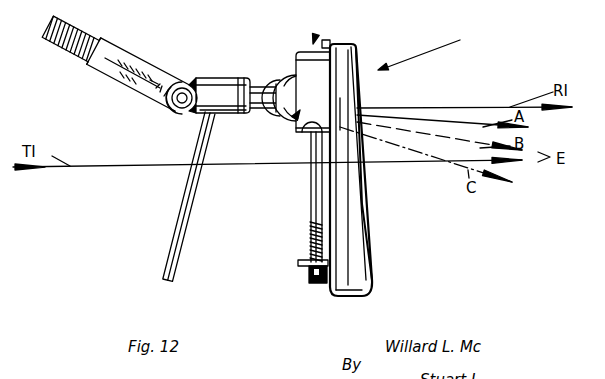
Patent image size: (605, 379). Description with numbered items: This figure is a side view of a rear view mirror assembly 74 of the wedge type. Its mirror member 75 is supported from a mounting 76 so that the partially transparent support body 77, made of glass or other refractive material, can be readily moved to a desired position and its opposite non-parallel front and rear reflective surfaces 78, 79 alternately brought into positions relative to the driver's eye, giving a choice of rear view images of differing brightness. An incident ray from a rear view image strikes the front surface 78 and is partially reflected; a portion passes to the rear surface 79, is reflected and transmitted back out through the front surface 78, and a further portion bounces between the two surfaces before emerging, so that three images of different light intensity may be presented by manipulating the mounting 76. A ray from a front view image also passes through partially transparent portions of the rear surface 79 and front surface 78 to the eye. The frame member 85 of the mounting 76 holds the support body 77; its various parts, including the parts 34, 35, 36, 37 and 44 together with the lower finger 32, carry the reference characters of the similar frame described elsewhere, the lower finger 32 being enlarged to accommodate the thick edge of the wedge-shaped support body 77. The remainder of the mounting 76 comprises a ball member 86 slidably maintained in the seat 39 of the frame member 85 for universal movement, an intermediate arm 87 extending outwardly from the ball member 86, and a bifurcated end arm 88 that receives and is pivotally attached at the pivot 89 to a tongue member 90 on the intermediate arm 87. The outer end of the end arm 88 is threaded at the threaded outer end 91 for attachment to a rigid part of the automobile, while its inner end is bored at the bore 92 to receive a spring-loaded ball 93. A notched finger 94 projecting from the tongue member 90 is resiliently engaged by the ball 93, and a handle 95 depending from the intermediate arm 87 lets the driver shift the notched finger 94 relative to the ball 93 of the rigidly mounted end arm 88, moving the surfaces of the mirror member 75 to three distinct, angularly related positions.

The lower finger 32 is at (352, 43).
The pivot pin 34 is at (300, 136).
The spring 35 is at (310, 238).
The stop block 36 is at (310, 274).
The ball 37 is at (310, 80).
The seat 39 is at (292, 102).
The tab 44 is at (316, 38).
The rear view mirror assembly 74 is at (432, 54).
The mirror member 75 is at (360, 207).
The mounting 76 is at (230, 63).
The support body 77 is at (340, 98).
The front reflective surface 78 is at (367, 225).
The rear reflective surface 79 is at (328, 213).
The frame member 85 is at (296, 114).
The ball member 86 is at (272, 100).
The intermediate arm 87 is at (228, 106).
The bifurcated end arm 88 is at (133, 62).
The pivotal attachment 89 is at (180, 102).
The tongue member 90 is at (184, 88).
The threaded outer end 91 is at (72, 42).
The bore 92 is at (113, 82).
The spring-loaded ball 93 is at (150, 90).
The notched finger 94 is at (160, 97).
The handle 95 is at (185, 217).